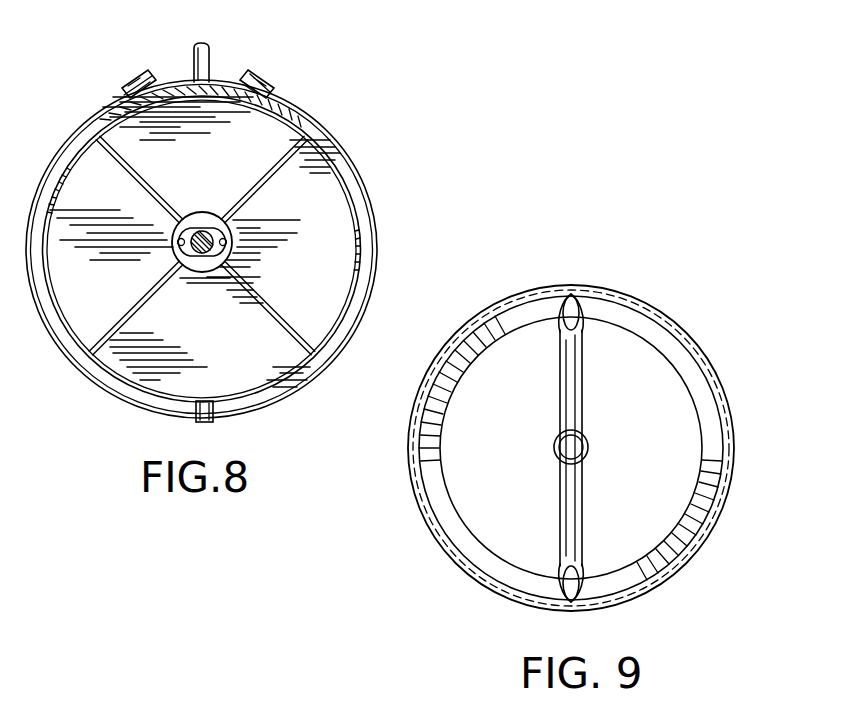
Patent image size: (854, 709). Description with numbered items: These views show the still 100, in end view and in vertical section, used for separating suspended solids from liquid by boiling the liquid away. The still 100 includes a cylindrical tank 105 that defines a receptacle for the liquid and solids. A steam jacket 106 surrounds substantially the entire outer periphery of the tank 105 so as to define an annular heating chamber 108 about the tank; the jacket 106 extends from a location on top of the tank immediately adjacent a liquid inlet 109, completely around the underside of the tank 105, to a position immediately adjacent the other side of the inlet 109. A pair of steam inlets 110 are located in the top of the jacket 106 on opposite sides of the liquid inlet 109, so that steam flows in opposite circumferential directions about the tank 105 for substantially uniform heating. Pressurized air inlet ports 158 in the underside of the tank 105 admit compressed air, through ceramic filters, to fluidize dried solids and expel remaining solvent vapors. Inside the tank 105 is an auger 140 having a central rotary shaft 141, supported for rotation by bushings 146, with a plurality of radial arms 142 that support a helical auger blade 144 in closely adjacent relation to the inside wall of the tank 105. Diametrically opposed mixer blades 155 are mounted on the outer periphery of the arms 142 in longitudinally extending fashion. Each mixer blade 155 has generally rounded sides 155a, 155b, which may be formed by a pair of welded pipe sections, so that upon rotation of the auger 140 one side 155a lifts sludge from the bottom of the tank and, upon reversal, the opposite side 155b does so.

In FIG. 8, the still 100 is at (356, 107).
In FIG. 8, the cylindrical tank 105 is at (372, 198).
In FIG. 9, the cylindrical tank 105 is at (692, 338).
In FIG. 8, the steam jacket 106 is at (370, 152).
In FIG. 8, the annular heating chamber 108 is at (303, 100).
In FIG. 8, the liquid inlet 109 is at (212, 58).
In FIG. 8, the steam inlets 110 is at (140, 72).
In FIG. 8, the central rotary shaft 141 is at (234, 240).
In FIG. 9, the central rotary shaft 141 is at (585, 438).
In FIG. 8, the bushings 146 is at (202, 212).
In FIG. 8, the pressurized air inlet ports 158 is at (216, 422).
In FIG. 9, the auger 140 is at (436, 520).
In FIG. 9, the radial arms 142 is at (583, 383).
In FIG. 9, the helical auger blade 144 is at (467, 368).
In FIG. 9, the mixer blades 155 is at (578, 296).
In FIG. 9, the rounded side 155a is at (557, 318).
In FIG. 9, the rounded side 155b is at (582, 313).